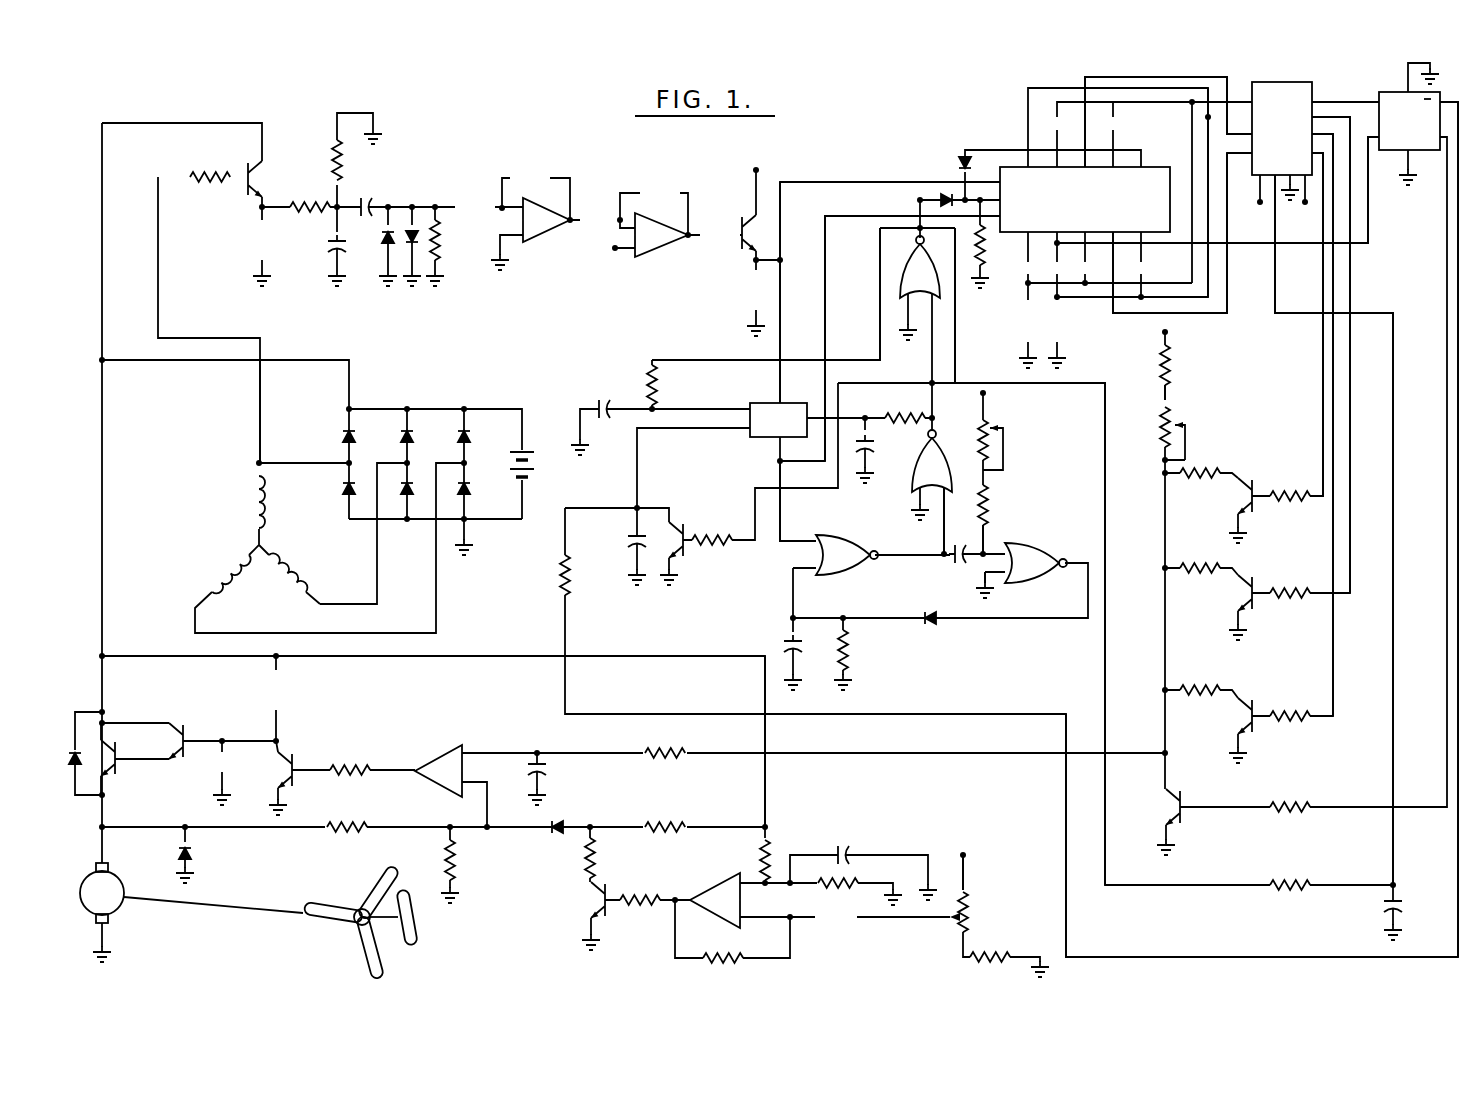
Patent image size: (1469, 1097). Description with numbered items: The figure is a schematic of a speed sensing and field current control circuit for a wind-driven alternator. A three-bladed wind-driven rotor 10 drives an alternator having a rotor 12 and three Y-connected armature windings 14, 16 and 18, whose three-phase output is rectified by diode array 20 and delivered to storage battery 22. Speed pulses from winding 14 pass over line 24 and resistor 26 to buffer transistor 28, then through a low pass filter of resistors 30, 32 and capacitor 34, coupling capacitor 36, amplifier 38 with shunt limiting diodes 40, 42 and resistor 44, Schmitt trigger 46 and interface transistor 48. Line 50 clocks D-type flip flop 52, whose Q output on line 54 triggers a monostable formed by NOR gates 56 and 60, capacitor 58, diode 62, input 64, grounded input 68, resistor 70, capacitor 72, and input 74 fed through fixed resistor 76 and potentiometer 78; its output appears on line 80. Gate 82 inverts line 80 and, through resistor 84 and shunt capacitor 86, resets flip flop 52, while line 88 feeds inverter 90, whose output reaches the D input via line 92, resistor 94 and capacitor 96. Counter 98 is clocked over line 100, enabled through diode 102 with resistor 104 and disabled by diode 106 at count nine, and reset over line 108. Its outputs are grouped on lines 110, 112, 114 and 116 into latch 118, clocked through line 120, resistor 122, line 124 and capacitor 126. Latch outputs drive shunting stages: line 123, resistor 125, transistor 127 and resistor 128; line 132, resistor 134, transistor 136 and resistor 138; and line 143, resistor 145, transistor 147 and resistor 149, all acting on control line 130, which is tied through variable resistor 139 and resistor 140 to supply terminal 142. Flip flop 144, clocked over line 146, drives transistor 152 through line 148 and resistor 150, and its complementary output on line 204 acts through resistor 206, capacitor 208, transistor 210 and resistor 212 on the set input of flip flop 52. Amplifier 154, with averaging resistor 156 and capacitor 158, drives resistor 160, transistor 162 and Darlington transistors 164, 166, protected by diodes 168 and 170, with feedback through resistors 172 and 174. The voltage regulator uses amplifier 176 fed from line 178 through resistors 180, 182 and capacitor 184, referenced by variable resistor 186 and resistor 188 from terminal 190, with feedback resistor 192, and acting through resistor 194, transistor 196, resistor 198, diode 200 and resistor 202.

The wind-driven rotor 10 is at (384, 957).
The alternator rotor 12 is at (118, 904).
The armature winding 14 is at (255, 503).
The armature winding 16 is at (230, 561).
The armature winding 18 is at (278, 582).
The diode array 20 is at (425, 398).
The storage battery 22 is at (540, 452).
The line 24 is at (263, 400).
The resistor 26 is at (213, 182).
The NPN transistor 28 is at (247, 172).
The resistor 30 is at (308, 202).
The resistor 32 is at (343, 163).
The capacitor 34 is at (329, 242).
The capacitor 36 is at (370, 203).
The operational amplifier 38 is at (541, 240).
The limiting diode 40 is at (415, 248).
The limiting diode 42 is at (385, 248).
The resistor 44 is at (440, 239).
The Schmitt trigger 46 is at (657, 250).
The NPN transistor 48 is at (740, 221).
The line 50 is at (780, 328).
The D-type flip flop 52 is at (772, 440).
The line 54 is at (780, 509).
The NOR gate 56 is at (854, 541).
The capacitor 58 is at (951, 562).
The NOR gate 60 is at (1025, 548).
The diode 62 is at (936, 627).
The input 64 is at (792, 568).
The input 68 is at (994, 586).
The resistor 70 is at (848, 650).
The capacitor 72 is at (784, 639).
The input 74 is at (988, 542).
The fixed resistor 76 is at (988, 494).
The variable resistor 78 is at (977, 442).
The line 80 is at (944, 524).
The gate 82 is at (912, 470).
The resistor 84 is at (905, 414).
The shunt capacitor 86 is at (873, 441).
The line 88 is at (926, 368).
The inverter 90 is at (948, 292).
The line 92 is at (880, 266).
The resistor 94 is at (659, 379).
The capacitor 96 is at (609, 397).
The counter 98 is at (1154, 164).
The line 100 is at (830, 182).
The diode 102 is at (942, 192).
The resistor 104 is at (985, 246).
The diode 106 is at (964, 155).
The line 108 is at (840, 216).
The line 110 is at (1157, 282).
The line 112 is at (1181, 298).
The line 114 is at (1223, 314).
The line 116 is at (1092, 76).
The latch 118 is at (1265, 84).
The line 120 is at (1278, 297).
The resistor 122 is at (1288, 884).
The line 123 is at (1353, 297).
The line 124 is at (1105, 490).
The resistor 125 is at (1286, 594).
The capacitor 126 is at (1384, 909).
The NPN transistor 127 is at (1250, 584).
The resistor 128 is at (1204, 572).
The control line 130 is at (1163, 620).
The line 132 is at (1323, 455).
The resistor 134 is at (1291, 714).
The NPN transistor 136 is at (1256, 738).
The resistor 138 is at (1202, 686).
The variable resistor 139 is at (1170, 414).
The fixed resistor 140 is at (1170, 376).
The supply terminal 142 is at (1158, 338).
The line 143 is at (1308, 425).
The D-type flip flop 144 is at (1388, 150).
The resistor 145 is at (1288, 490).
The line 146 is at (1244, 244).
The transistor 147 is at (1250, 480).
The line 148 is at (1452, 648).
The resistor 149 is at (1207, 476).
The resistor 150 is at (1292, 804).
The NPN transistor 152 is at (1187, 797).
The operational amplifier 154 is at (440, 750).
The resistor 156 is at (660, 758).
The capacitor 158 is at (542, 775).
The resistor 160 is at (349, 764).
The NPN transistor 162 is at (294, 756).
The transistor 164 is at (186, 732).
The transistor 166 is at (122, 764).
The protective diode 168 is at (100, 785).
The diode 170 is at (198, 856).
The series resistor 172 is at (351, 826).
The shunt resistor 174 is at (452, 850).
The operational amplifier 176 is at (720, 888).
The line 178 is at (766, 803).
The resistor 180 is at (775, 854).
The resistor 182 is at (826, 884).
The smoothing capacitor 184 is at (854, 852).
The variable resistor 186 is at (970, 904).
The fixed resistor 188 is at (1003, 956).
The positive five volt terminal 190 is at (965, 856).
The feedback resistor 192 is at (732, 958).
The resistor 194 is at (636, 896).
The transistor 196 is at (608, 910).
The resistor 198 is at (587, 844).
The diode 200 is at (569, 817).
The resistor 202 is at (666, 826).
The line 204 is at (1180, 957).
The resistor 206 is at (575, 574).
The capacitor 208 is at (629, 530).
The transistor 210 is at (682, 555).
The resistor 212 is at (709, 536).